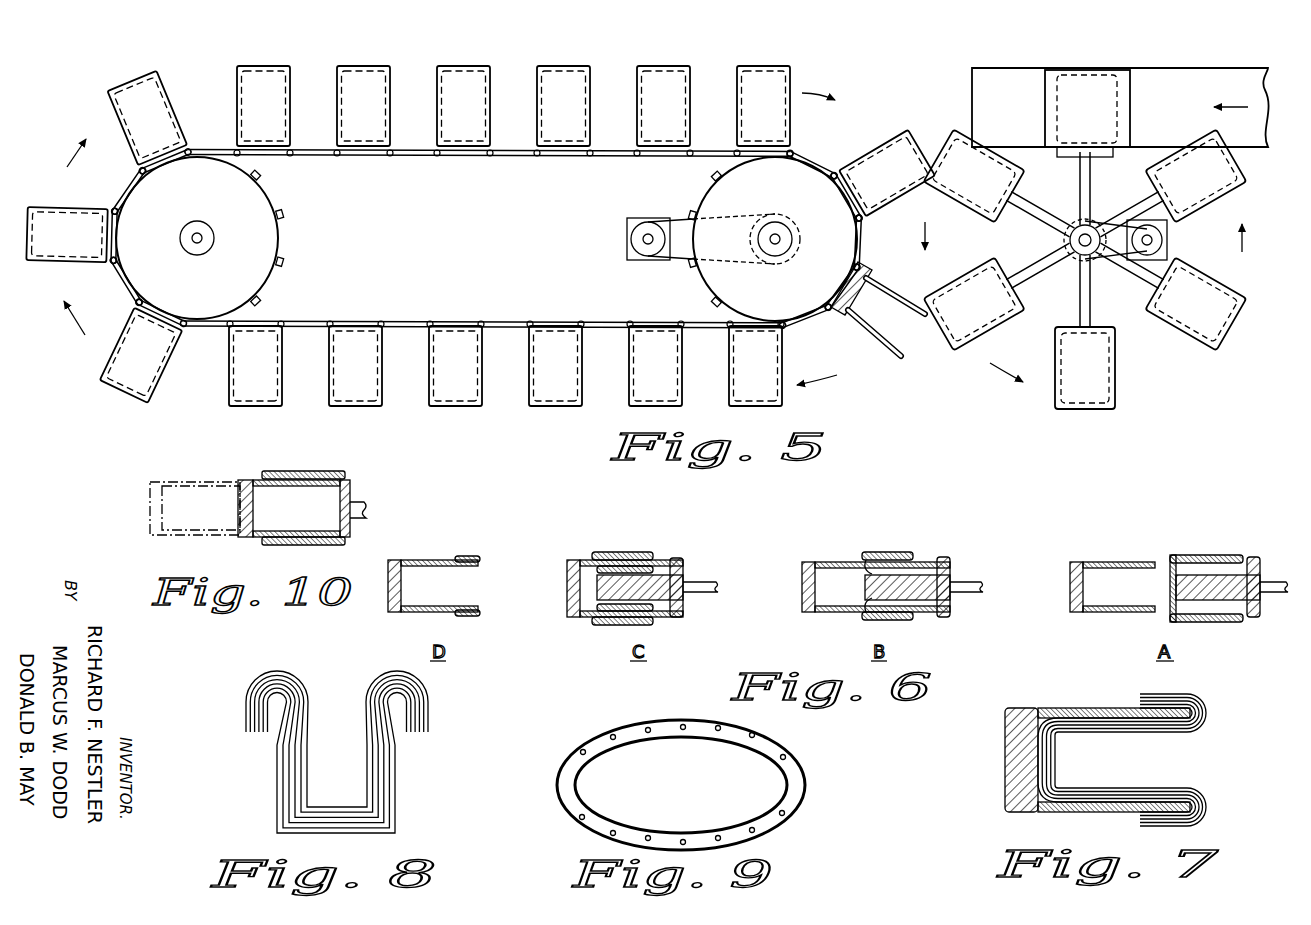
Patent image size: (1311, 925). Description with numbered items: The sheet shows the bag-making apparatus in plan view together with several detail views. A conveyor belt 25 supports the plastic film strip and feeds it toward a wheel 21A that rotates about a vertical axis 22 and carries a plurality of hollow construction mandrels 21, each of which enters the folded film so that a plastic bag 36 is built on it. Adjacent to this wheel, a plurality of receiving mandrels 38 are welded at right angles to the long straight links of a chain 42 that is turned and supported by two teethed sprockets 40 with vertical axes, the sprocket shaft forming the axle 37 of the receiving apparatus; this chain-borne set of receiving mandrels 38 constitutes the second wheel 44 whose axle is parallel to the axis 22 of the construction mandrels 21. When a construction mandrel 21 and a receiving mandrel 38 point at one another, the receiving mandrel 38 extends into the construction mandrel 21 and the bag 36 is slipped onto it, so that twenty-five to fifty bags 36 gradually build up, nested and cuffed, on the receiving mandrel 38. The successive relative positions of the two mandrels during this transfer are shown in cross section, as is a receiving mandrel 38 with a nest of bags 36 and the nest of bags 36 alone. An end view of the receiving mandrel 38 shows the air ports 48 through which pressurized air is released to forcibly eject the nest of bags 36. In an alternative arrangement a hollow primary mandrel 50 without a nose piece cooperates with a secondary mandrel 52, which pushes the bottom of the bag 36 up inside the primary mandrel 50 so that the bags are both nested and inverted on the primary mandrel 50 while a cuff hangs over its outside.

In FIG. 5, the construction mandrel 21 is at (1023, 177).
In FIG. 6, the construction mandrel 21 is at (687, 560).
In FIG. 5, the wheel 21A is at (1162, 391).
In FIG. 5, the vertical axis 22 is at (1080, 260).
In FIG. 5, the conveyor belt 25 is at (1208, 80).
In FIG. 5, the plastic bag 36 is at (906, 355).
In FIG. 10, the plastic bag 36 is at (278, 471).
In FIG. 6, the plastic bag 36 is at (480, 557).
In FIG. 8, the plastic bag 36 is at (253, 683).
In FIG. 7, the plastic bag 36 is at (1190, 728).
In FIG. 5, the axle 37 is at (206, 237).
In FIG. 5, the receiving mandrel 38 is at (125, 90).
In FIG. 6, the receiving mandrel 38 is at (403, 560).
In FIG. 9, the receiving mandrel 38 is at (555, 778).
In FIG. 7, the receiving mandrel 38 is at (1005, 767).
In FIG. 5, the teethed sprocket 40 is at (280, 246).
In FIG. 5, the chain 42 is at (408, 158).
In FIG. 5, the second wheel 44 is at (213, 428).
In FIG. 9, the air ports 48 is at (715, 728).
In FIG. 10, the primary mandrel 50 is at (352, 488).
In FIG. 10, the secondary mandrel 52 is at (253, 482).